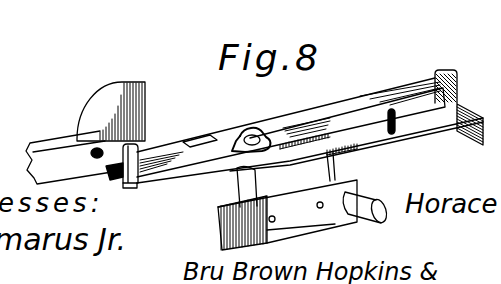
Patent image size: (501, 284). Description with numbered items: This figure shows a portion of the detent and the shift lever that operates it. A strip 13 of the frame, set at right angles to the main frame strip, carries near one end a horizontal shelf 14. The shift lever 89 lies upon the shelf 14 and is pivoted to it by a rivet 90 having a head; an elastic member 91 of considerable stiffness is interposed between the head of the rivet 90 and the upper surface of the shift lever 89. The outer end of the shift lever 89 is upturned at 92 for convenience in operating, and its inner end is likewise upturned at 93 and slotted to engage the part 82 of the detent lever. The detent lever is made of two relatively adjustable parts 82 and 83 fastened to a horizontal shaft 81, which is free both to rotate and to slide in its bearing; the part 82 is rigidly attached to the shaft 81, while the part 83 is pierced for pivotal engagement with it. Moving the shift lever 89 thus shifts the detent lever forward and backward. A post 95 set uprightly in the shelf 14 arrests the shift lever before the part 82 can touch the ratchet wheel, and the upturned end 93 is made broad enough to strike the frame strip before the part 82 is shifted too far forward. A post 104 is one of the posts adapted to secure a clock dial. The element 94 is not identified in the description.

The strip 13 is at (302, 223).
The horizontal shelf 14 is at (463, 117).
The horizontal shaft 81 is at (78, 143).
The part of the detent lever 82 is at (141, 108).
The part of the detent lever 83 is at (39, 146).
The shift lever 89 is at (308, 127).
The rivet 90 is at (256, 129).
The elastic member 91 is at (234, 143).
The upturned outer end 92 is at (447, 70).
The upturned inner end 93 is at (139, 148).
The foot of block 94 is at (134, 186).
The post 95 is at (395, 130).
The post 104 is at (370, 205).